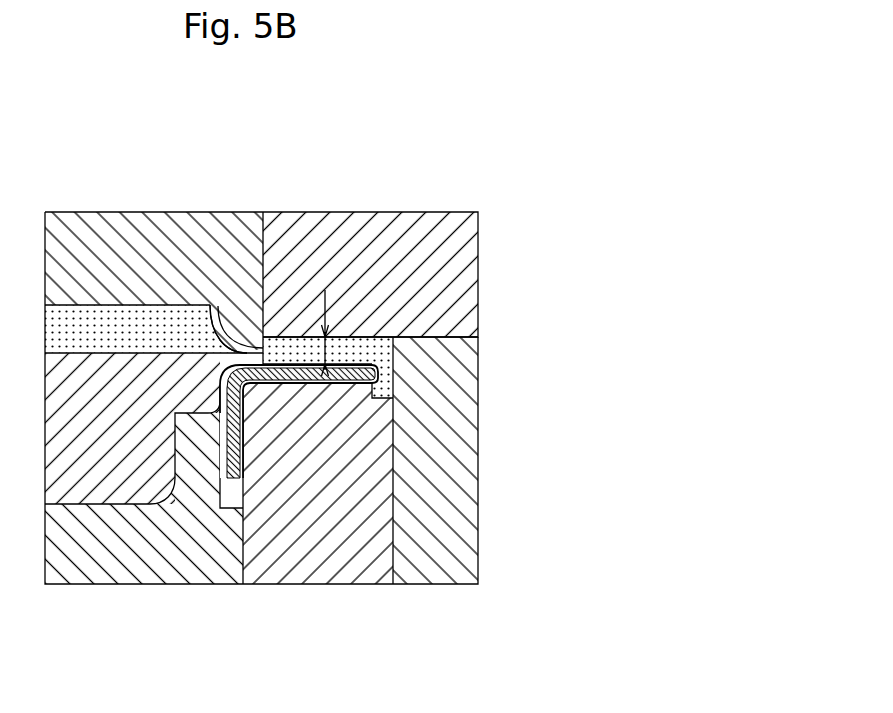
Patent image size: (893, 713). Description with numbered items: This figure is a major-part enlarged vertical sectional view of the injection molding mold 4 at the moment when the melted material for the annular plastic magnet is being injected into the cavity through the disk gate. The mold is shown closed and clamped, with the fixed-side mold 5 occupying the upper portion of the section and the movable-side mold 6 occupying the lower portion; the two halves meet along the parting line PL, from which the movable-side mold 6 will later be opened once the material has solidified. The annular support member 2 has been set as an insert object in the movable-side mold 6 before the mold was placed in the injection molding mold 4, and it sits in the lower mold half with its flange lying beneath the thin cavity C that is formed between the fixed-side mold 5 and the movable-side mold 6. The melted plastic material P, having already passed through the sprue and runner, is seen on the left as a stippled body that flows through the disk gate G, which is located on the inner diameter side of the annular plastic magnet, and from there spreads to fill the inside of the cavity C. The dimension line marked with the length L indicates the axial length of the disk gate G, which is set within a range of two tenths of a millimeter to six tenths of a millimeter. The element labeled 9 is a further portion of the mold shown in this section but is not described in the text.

The injection molding mold 4 is at (309, 384).
The fixed-side mold 5 is at (347, 241).
The movable-side mold 6 is at (361, 550).
The slide core 9 is at (114, 482).
The annular support member 2 is at (282, 398).
The melted plastic material P is at (123, 323).
The disk gate G is at (210, 305).
The length in the axial direction of the disk gate L is at (315, 329).
The parting line PL is at (436, 338).
The cavity C is at (395, 367).